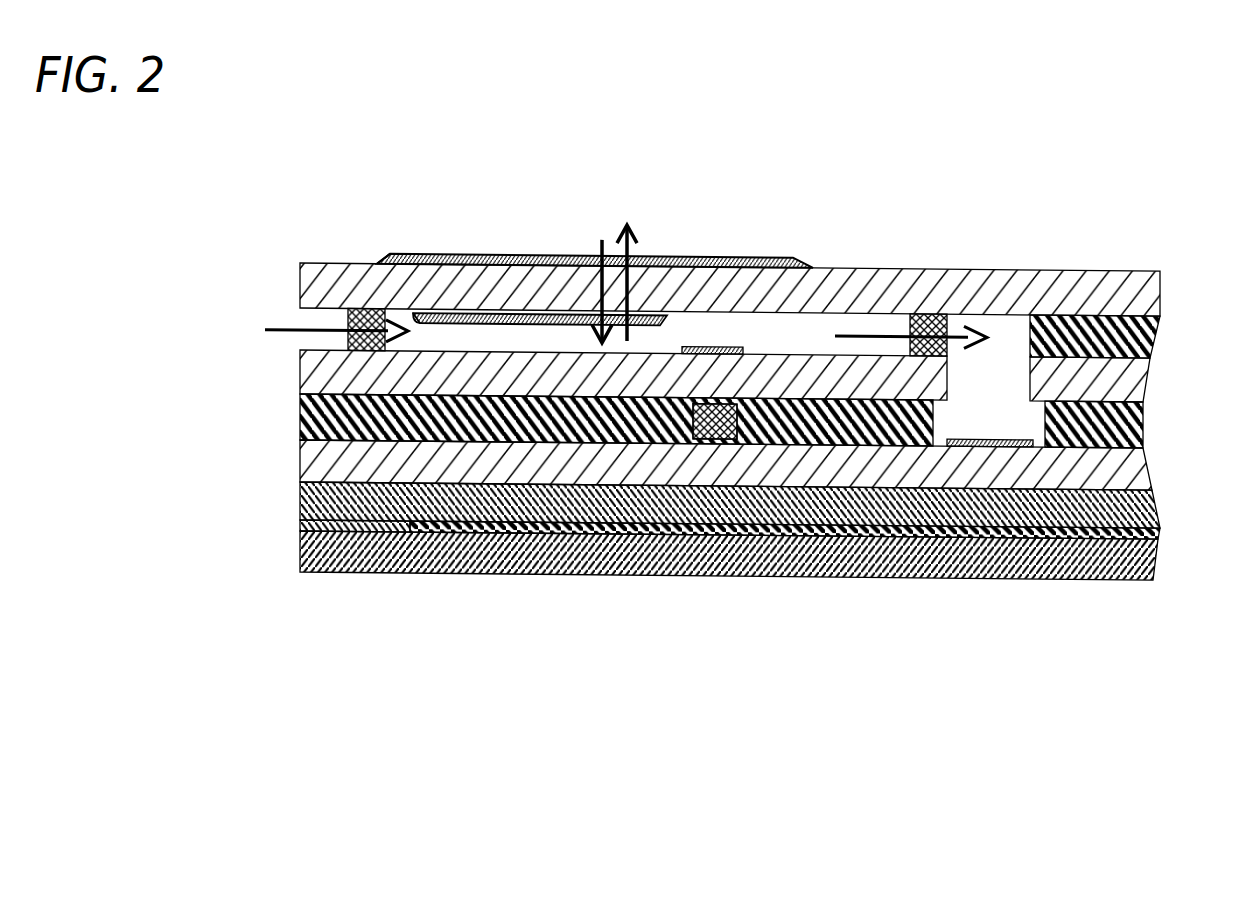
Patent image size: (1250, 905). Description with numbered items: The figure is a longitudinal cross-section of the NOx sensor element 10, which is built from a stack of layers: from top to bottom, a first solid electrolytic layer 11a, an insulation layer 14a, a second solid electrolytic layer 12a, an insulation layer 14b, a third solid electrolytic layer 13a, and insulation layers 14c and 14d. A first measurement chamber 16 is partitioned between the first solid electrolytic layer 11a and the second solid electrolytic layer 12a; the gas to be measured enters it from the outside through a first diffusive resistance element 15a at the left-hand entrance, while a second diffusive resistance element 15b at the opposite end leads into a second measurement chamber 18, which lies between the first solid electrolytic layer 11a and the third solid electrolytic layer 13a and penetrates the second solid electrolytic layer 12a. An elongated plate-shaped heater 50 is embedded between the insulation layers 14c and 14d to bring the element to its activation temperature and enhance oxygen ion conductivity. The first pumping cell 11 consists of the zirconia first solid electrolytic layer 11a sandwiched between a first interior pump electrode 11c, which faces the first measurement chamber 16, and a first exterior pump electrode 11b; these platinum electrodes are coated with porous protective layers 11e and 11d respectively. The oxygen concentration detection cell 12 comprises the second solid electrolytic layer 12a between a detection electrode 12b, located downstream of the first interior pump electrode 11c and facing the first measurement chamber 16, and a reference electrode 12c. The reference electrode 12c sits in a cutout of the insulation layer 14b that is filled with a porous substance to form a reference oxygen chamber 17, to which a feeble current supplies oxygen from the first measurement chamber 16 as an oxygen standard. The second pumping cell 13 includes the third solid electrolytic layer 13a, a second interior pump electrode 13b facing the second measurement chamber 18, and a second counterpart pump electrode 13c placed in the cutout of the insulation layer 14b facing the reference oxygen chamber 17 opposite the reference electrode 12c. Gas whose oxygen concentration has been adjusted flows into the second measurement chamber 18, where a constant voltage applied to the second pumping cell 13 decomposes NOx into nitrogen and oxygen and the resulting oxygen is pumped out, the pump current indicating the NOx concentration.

The NOx sensor element 10 is at (1057, 202).
The first pumping cell 11 is at (592, 185).
The first solid electrolytic layer 11a is at (546, 275).
The first exterior pump electrode 11b is at (500, 255).
The first interior pump electrode 11c is at (445, 311).
The protective layer 11d is at (390, 260).
The protective layer 11e is at (422, 313).
The oxygen concentration detection cell 12 is at (840, 185).
The second solid electrolytic layer 12a is at (770, 365).
The detection electrode 12b is at (718, 346).
The reference electrode 12c is at (690, 433).
The second pumping cell 13 is at (1030, 638).
The third solid electrolytic layer 13a is at (980, 475).
The second interior pump electrode 13b is at (947, 442).
The second counterpart pump electrode 13c is at (767, 443).
The insulation layer 14a is at (1158, 332).
The insulation layer 14b is at (300, 416).
The insulation layer 14c is at (300, 495).
The insulation layer 14d is at (300, 546).
The first diffusive resistance element 15a is at (348, 310).
The second diffusive resistance element 15b is at (928, 308).
The first measurement chamber 16 is at (457, 335).
The reference oxygen chamber 17 is at (688, 398).
The second measurement chamber 18 is at (1000, 326).
The heater 50 is at (508, 526).